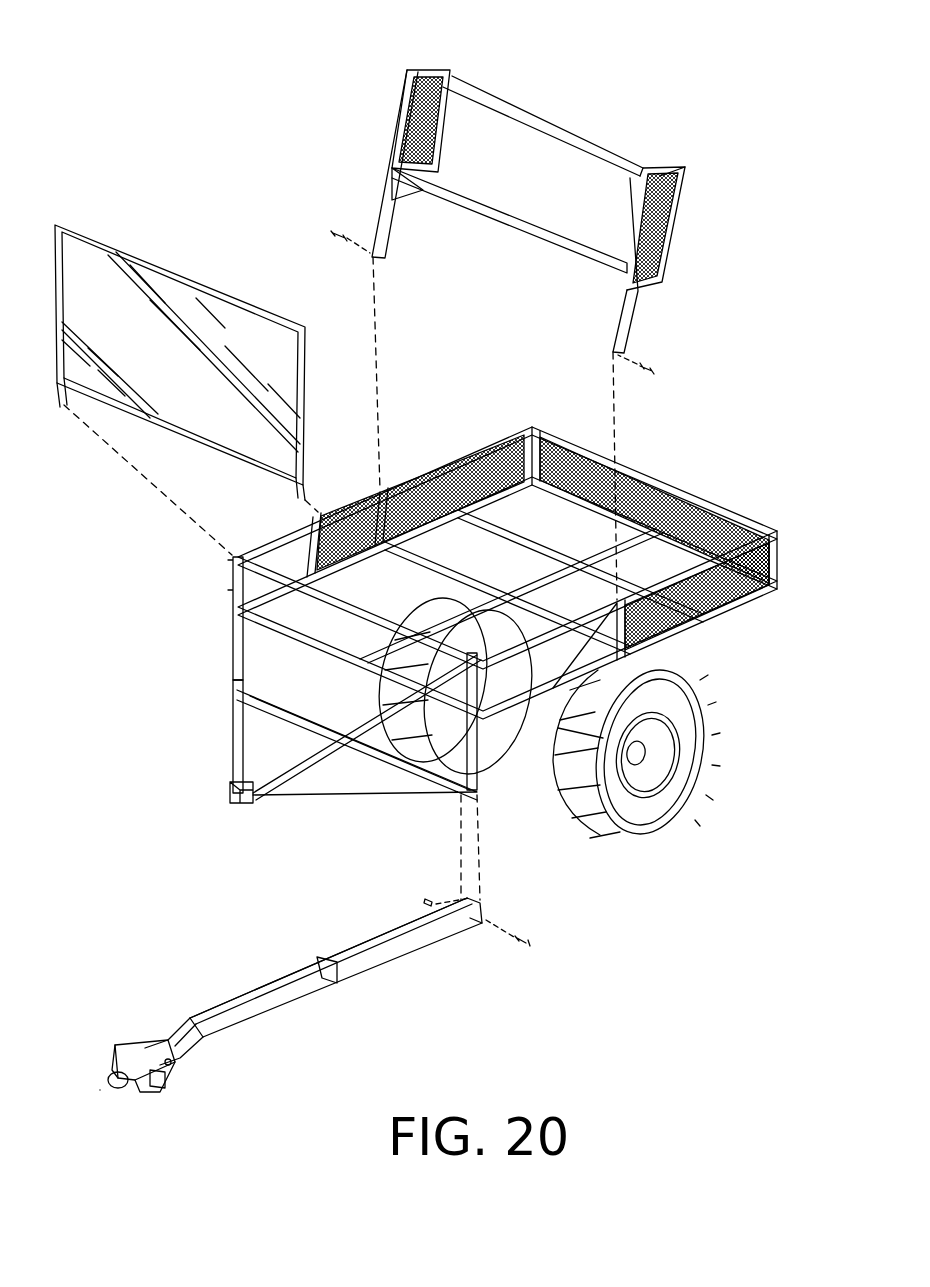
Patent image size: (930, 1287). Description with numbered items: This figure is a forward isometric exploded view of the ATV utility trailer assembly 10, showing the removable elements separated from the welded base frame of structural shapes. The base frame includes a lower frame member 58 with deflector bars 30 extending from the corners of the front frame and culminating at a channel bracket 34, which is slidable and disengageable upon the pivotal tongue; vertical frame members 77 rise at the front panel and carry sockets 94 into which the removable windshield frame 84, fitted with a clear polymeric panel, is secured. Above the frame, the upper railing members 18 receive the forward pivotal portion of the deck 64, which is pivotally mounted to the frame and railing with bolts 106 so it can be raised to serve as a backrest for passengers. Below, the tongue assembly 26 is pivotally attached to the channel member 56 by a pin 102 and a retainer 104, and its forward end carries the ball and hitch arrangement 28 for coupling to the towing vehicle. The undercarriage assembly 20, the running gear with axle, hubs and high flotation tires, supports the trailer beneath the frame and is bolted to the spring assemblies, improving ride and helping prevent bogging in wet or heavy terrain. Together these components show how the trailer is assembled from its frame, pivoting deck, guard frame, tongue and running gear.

The utility trailer assembly 10 is at (728, 425).
The upper railing members 18 is at (477, 663).
The undercarriage assembly 20 is at (720, 765).
The tongue assembly 26 is at (411, 962).
The ball and hitch arrangement 28 is at (142, 1028).
The deflector bars 30 is at (230, 690).
The channel bracket 34 is at (245, 805).
The channel member 56 is at (365, 760).
The lower frame member 58 is at (280, 707).
The forward pivotal portion of deck 64 is at (632, 135).
The vertical frame members 77 is at (232, 630).
The windshield frame 84 is at (160, 270).
The sockets 94 is at (228, 568).
The pin 102 is at (530, 941).
The retainer 104 is at (424, 898).
The bolts 106 is at (341, 230).